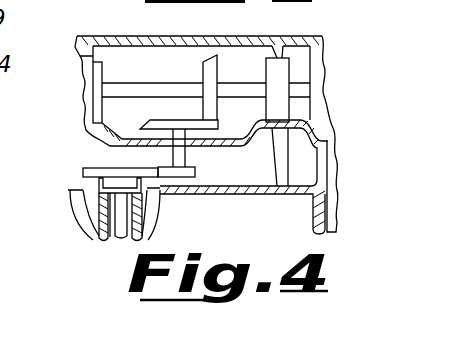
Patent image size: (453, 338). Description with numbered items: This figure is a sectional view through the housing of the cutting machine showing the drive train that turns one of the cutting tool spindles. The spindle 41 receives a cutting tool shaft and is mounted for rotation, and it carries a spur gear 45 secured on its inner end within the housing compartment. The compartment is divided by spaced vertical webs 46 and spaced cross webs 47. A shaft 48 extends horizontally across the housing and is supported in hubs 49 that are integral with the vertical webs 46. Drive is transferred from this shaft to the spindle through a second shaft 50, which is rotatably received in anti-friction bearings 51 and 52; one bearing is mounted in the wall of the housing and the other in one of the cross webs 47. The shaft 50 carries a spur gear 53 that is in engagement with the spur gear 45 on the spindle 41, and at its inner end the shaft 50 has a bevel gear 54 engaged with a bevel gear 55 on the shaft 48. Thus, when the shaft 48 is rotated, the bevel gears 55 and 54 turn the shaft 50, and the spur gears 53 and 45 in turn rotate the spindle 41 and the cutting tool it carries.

The spindle 41 is at (120, 235).
The spur gear 45 is at (83, 168).
The vertical web 46 is at (290, 162).
The cross web 47 is at (88, 129).
The shaft 48 is at (128, 76).
The hub 49 is at (90, 72).
The shaft 50 is at (186, 157).
The anti-friction bearing 51 is at (185, 198).
The anti-friction bearing 52 is at (165, 149).
The spur gear 53 is at (197, 171).
The bevel gear 54 is at (153, 127).
The bevel gear 55 is at (203, 69).